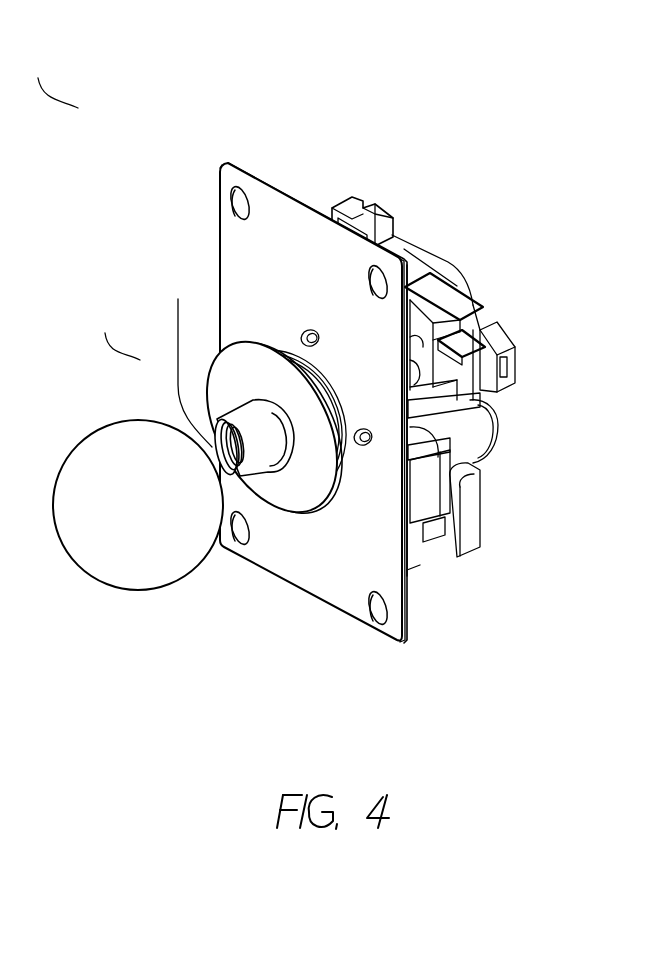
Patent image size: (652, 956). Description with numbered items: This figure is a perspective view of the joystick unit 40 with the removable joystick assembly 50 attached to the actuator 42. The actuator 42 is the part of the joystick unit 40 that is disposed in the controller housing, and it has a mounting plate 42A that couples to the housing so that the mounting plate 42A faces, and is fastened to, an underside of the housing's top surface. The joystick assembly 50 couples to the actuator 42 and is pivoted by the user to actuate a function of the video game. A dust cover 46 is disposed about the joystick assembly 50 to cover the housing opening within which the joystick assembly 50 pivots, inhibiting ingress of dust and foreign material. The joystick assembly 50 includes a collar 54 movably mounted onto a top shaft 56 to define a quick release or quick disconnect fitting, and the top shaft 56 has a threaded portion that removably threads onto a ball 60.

The joystick unit 40 is at (58, 84).
The actuator 42 is at (530, 261).
The mounting plate 42A is at (283, 218).
The dust cover 46 is at (248, 390).
The joystick assembly 50 is at (123, 338).
The collar 54 is at (266, 465).
The top shaft 56 is at (194, 366).
The ball 60 is at (148, 515).